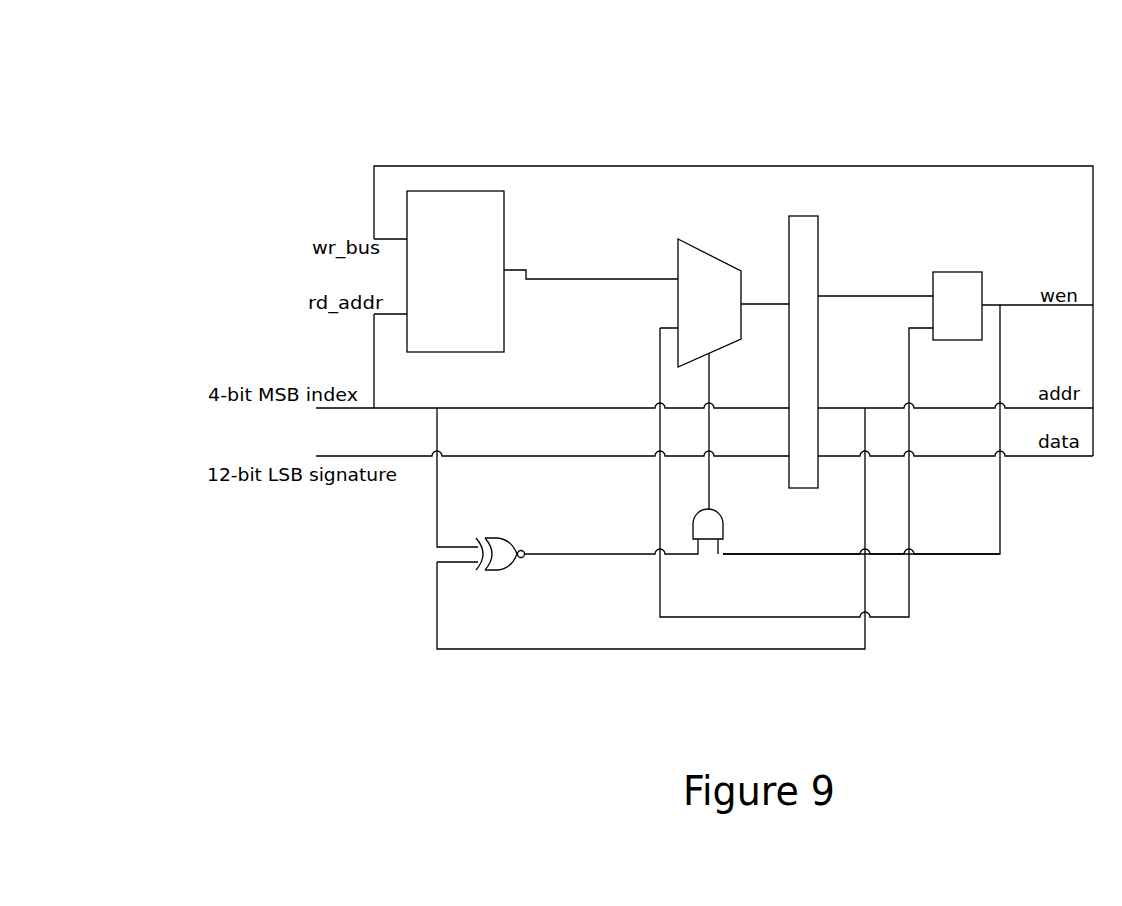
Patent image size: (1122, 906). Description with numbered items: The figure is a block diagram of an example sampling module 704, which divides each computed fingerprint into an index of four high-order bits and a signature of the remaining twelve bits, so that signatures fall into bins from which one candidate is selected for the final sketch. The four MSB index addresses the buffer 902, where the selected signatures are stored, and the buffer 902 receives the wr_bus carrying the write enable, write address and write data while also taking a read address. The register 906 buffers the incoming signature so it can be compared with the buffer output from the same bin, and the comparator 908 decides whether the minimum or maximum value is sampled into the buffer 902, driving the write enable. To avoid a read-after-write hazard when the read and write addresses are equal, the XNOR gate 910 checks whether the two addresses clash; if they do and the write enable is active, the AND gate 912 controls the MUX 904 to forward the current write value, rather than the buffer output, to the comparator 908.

The sampling module 704 is at (330, 71).
The buffer 902 is at (455, 271).
The MUX 904 is at (709, 303).
The register 906 is at (818, 264).
The comparator 908 is at (982, 289).
The XNOR gate 910 is at (512, 548).
The AND gate 912 is at (723, 522).